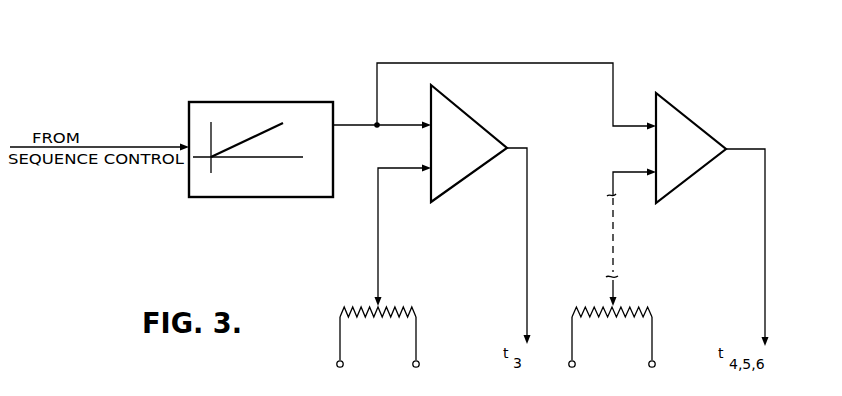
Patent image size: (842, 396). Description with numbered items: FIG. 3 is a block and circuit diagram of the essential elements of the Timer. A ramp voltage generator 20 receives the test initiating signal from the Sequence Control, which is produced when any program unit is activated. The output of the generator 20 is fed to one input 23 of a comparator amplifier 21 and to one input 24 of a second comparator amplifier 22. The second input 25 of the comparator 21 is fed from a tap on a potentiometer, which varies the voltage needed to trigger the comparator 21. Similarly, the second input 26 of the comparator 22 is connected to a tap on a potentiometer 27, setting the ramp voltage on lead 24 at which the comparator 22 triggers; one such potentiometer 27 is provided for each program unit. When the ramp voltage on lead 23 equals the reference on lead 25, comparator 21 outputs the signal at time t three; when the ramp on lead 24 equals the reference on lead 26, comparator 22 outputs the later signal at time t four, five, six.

The ramp voltage generator 20 is at (223, 197).
The comparator amplifier 21 is at (467, 154).
The comparator amplifier 22 is at (688, 154).
The input 23 is at (400, 125).
The input 24 is at (613, 100).
The second input 25 is at (378, 222).
The second input 26 is at (393, 317).
The potentiometer 27 is at (630, 317).